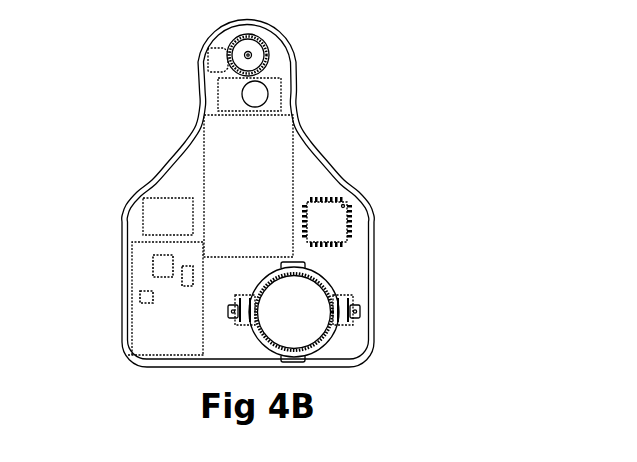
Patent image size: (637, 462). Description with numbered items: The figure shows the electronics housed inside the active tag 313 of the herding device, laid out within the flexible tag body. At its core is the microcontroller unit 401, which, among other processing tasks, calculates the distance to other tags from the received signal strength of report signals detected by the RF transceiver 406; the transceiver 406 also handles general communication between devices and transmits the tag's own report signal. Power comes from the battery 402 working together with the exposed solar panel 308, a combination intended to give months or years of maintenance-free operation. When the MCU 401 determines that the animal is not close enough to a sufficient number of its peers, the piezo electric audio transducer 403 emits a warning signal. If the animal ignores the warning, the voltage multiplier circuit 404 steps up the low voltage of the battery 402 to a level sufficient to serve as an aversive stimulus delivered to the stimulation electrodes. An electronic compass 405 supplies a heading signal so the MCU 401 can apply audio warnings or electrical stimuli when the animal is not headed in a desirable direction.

The active tag 313 is at (375, 258).
The solar panel 308 is at (280, 140).
The microcontroller unit 401 is at (330, 213).
The battery 402 is at (313, 323).
The piezo electric audio transducer 403 is at (199, 53).
The voltage multiplier circuit 404 is at (279, 82).
The electronic compass 405 is at (157, 213).
The RF transceiver 406 is at (143, 330).